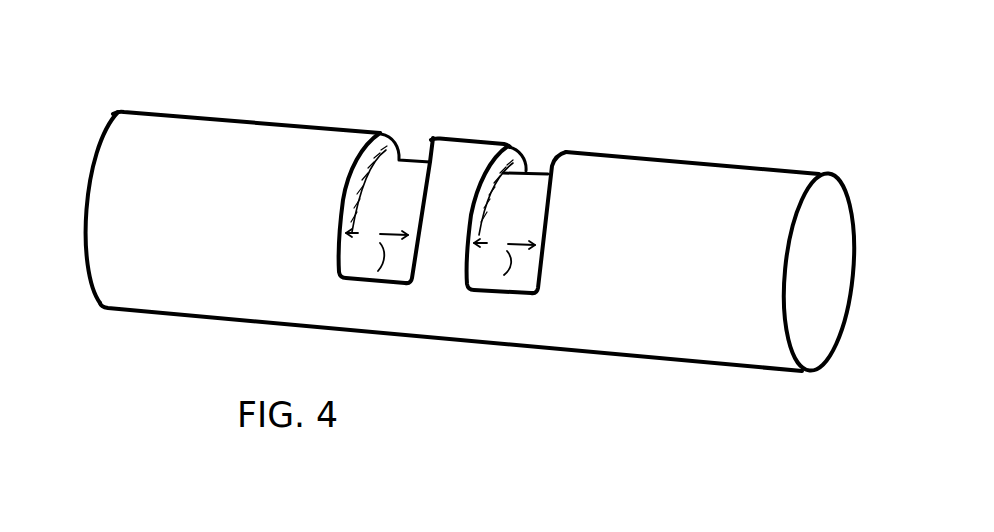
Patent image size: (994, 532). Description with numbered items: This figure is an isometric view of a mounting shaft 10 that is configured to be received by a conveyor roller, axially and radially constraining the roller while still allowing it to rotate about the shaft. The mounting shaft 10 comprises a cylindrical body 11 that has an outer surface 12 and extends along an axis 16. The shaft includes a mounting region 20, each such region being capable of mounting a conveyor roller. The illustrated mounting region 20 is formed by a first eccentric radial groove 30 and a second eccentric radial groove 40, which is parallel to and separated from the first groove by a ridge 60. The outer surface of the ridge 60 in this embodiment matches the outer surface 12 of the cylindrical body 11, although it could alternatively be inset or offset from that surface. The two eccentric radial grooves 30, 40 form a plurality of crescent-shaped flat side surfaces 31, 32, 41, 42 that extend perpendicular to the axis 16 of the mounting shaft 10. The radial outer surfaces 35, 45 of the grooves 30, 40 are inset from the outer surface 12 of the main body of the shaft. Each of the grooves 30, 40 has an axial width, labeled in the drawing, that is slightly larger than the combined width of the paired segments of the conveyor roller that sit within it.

The mounting shaft 10 is at (574, 108).
The cylindrical body 11 is at (674, 207).
The outer surface 12 is at (600, 216).
The axis 16 is at (86, 204).
The mounting region 20 is at (377, 115).
The first eccentric radial groove 30 is at (416, 121).
The crescent-shaped flat side surface 31 is at (380, 132).
The crescent-shaped flat side surface 32 is at (404, 174).
The radial outer surface 35 is at (393, 209).
The second eccentric radial groove 40 is at (534, 130).
The crescent-shaped flat side surface 41 is at (514, 148).
The crescent-shaped flat side surface 42 is at (562, 150).
The radial outer surface 45 is at (527, 218).
The ridge 60 is at (463, 147).